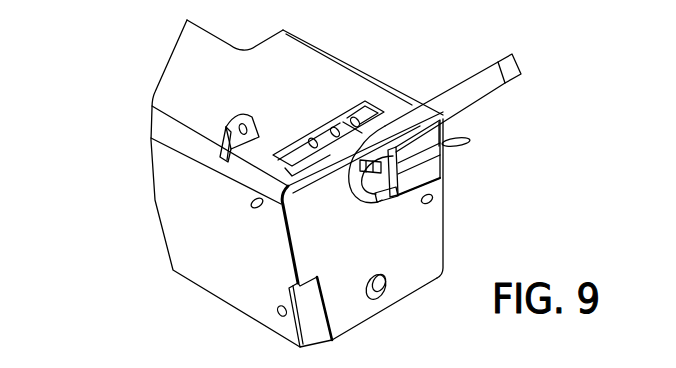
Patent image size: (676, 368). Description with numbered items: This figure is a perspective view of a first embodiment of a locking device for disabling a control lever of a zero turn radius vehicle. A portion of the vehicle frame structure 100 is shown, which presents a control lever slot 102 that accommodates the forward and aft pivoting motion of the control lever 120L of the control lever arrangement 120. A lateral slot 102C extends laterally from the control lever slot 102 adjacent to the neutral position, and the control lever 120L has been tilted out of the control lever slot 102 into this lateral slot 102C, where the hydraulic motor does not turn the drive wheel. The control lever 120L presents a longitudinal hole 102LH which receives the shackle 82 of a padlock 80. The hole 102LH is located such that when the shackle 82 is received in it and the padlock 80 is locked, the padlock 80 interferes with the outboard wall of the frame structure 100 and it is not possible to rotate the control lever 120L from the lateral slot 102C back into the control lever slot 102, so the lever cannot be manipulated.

The frame structure 100 is at (120, 206).
The control lever slot 102 is at (289, 157).
The lateral slot 102C is at (358, 140).
The longitudinal hole 102LH is at (392, 143).
The shackle 82 is at (370, 199).
The padlock 80 is at (433, 170).
The control lever arrangement 120 is at (509, 86).
The control lever 120L is at (470, 96).